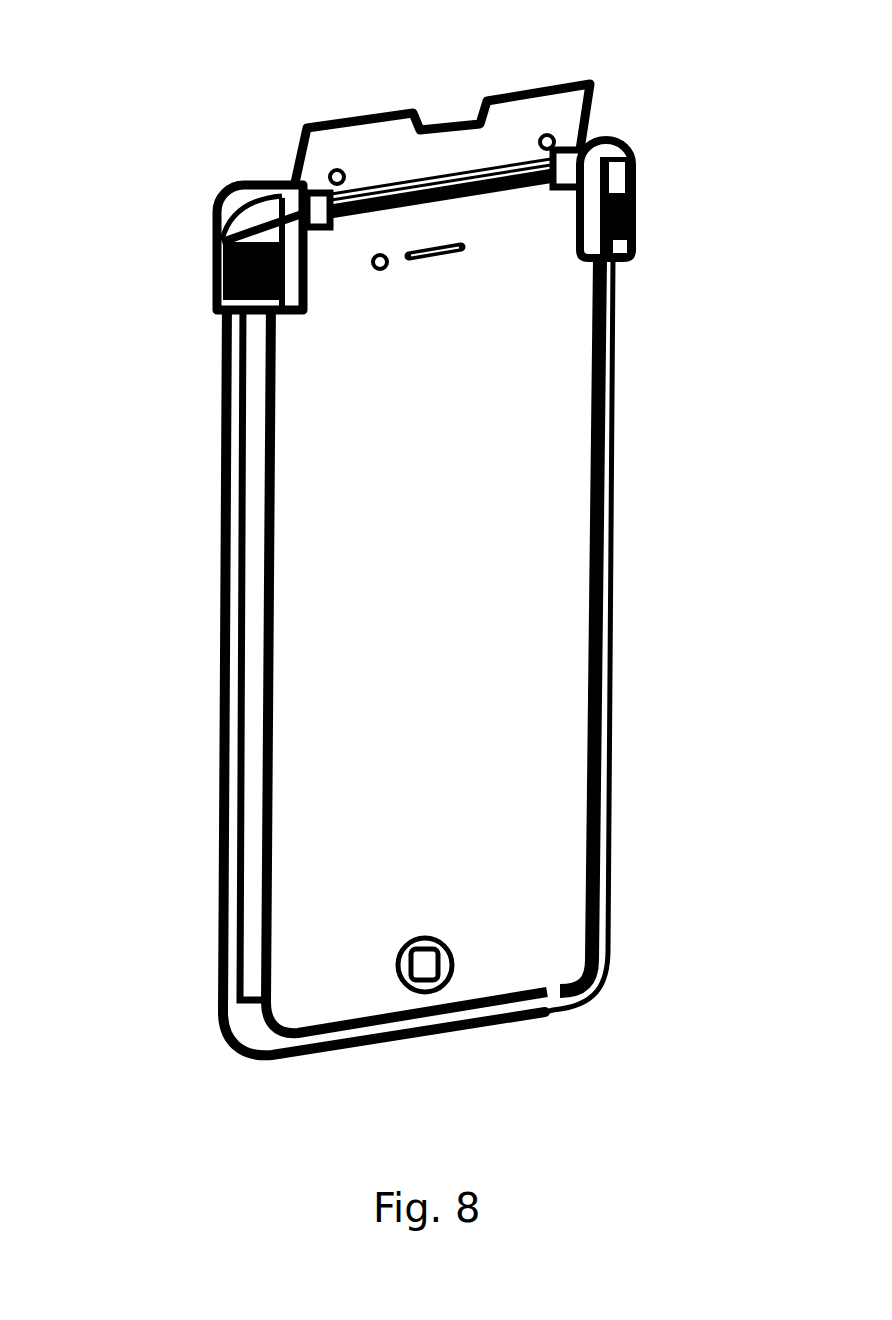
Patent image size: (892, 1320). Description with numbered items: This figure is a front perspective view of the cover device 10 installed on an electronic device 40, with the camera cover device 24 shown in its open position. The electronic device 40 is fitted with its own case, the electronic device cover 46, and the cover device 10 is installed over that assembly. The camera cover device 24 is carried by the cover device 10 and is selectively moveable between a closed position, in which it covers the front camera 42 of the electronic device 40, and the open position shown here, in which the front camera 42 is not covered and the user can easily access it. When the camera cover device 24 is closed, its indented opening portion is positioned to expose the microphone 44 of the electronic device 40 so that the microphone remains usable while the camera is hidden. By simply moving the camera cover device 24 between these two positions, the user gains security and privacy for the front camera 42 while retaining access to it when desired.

The cover device 10 is at (603, 143).
The camera cover device 24 is at (510, 135).
The electronic device 40 is at (419, 656).
The front camera 42 is at (372, 256).
The microphone 44 is at (430, 250).
The electronic device cover 46 is at (255, 652).